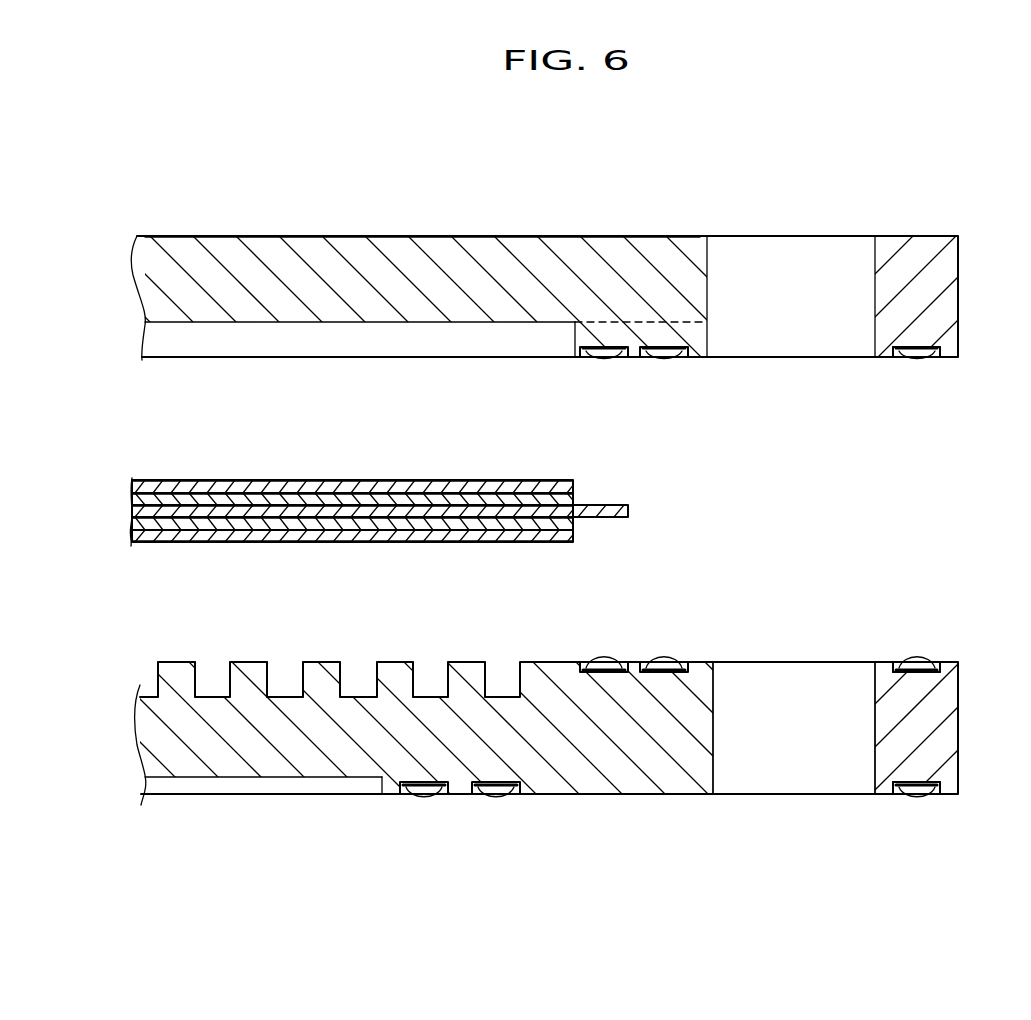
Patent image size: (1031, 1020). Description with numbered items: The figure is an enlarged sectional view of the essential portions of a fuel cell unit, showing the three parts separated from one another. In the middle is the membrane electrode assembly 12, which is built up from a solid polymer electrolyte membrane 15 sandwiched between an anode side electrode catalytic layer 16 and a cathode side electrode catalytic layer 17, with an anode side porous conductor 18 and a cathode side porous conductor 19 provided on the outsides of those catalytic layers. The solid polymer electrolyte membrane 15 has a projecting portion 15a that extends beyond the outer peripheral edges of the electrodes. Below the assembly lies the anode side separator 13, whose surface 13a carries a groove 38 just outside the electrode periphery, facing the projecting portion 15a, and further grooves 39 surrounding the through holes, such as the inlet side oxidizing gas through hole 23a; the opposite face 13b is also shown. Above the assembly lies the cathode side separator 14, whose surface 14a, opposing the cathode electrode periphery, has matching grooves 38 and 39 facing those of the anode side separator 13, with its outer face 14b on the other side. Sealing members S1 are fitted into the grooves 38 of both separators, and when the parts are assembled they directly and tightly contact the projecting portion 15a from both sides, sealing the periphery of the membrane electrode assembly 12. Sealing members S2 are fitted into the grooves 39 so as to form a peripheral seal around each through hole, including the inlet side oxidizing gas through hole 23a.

The membrane electrode assembly 12 is at (123, 478).
The anode side separator 13 is at (644, 800).
The surface of the anode side separator 13a is at (173, 660).
The bottom wall of lower case 13b is at (258, 796).
The cathode side separator 14 is at (405, 233).
The surface of the cathode side separator 14a is at (213, 358).
The top surface of upper case 14b is at (230, 235).
The solid polymer electrolyte membrane 15 is at (427, 518).
The projecting portion 15a is at (605, 518).
The anode side electrode catalytic layer 16 is at (373, 523).
The cathode side electrode catalytic layer 17 is at (372, 498).
The anode side porous conductor 18 is at (323, 535).
The cathode side porous conductor 19 is at (313, 487).
The inlet side oxidizing gas through hole 23a is at (790, 765).
The groove 38 is at (588, 359).
The groove 39 is at (935, 359).
The sealing member S1 is at (597, 356).
The sealing member S2 is at (658, 356).